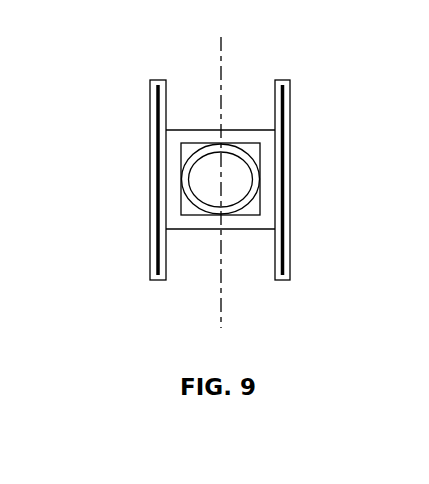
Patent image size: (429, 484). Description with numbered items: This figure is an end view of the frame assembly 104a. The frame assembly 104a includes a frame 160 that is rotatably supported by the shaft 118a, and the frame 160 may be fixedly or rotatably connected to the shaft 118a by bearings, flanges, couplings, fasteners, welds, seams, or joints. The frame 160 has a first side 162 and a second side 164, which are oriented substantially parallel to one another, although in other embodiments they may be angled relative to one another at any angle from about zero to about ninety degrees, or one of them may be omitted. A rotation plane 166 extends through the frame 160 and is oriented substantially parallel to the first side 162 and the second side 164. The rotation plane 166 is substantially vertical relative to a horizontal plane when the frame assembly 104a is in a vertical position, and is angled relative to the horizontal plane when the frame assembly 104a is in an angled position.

The frame assembly 104a is at (183, 63).
The rotation plane 166 is at (222, 75).
The second side 164 is at (150, 178).
The frame 160 is at (290, 108).
The first side 162 is at (290, 248).
The shaft 118a is at (221, 173).